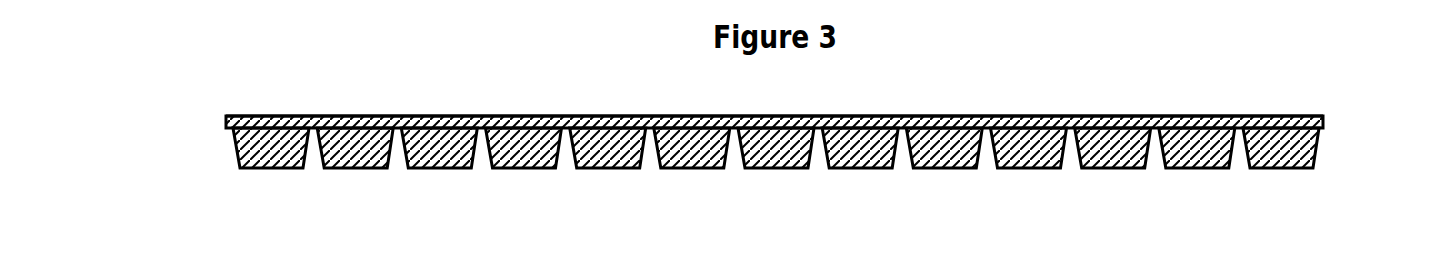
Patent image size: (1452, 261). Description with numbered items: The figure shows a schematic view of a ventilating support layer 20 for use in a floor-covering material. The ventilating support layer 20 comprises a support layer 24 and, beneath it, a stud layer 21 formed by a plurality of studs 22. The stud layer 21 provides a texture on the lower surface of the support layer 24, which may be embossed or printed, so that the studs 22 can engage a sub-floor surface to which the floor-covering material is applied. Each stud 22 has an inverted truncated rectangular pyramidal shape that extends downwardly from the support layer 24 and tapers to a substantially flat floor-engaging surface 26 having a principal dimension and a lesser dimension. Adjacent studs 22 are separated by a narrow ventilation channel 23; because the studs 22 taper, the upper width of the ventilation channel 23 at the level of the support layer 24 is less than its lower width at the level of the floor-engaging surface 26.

The ventilating support layer 20 is at (757, 146).
The stud layer 21 is at (235, 154).
The stud 22 is at (1267, 160).
The ventilation channel 23 is at (732, 153).
The support layer 24 is at (1217, 113).
The floor-engaging surface 26 is at (852, 168).